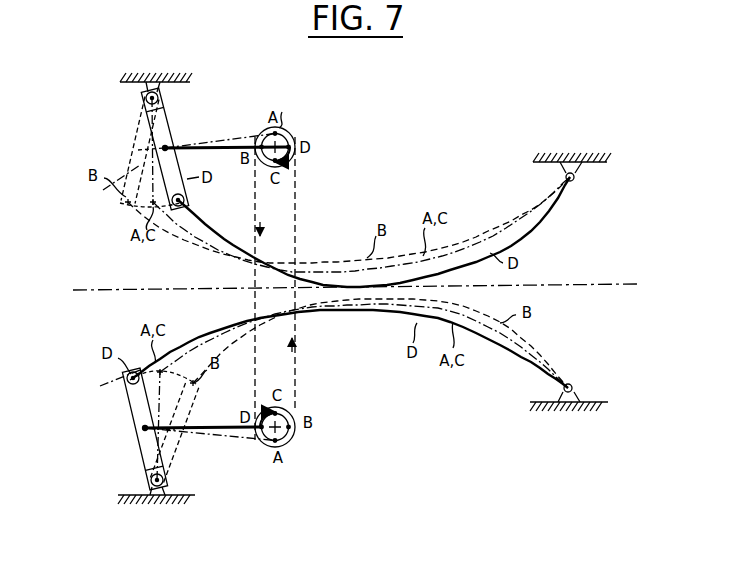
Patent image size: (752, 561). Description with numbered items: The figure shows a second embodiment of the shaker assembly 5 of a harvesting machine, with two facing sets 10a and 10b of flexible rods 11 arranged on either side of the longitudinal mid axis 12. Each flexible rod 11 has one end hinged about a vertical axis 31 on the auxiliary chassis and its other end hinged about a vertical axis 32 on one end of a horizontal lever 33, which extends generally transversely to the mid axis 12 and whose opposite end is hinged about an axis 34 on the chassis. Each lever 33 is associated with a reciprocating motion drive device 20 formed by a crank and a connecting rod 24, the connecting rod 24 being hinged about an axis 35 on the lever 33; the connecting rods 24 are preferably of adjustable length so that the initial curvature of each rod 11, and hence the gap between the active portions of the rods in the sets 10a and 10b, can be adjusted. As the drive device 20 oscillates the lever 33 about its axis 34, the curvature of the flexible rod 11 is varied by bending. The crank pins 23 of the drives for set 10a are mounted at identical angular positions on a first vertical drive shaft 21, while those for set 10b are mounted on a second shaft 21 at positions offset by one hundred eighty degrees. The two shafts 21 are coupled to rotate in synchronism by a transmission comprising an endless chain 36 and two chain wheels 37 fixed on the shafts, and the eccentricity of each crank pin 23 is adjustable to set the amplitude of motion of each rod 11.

The shaker assembly 5 is at (100, 272).
The first set of flexible rods 10a is at (343, 242).
The second set of flexible rods 10b is at (360, 326).
The flexible rod 11 is at (523, 237).
The longitudinal mid axis 12 is at (620, 283).
The reciprocating motion drive device 20 is at (303, 135).
The common vertical drive shaft 21 is at (290, 157).
The crank pin 23 is at (290, 132).
The connecting rod 24 is at (227, 146).
The vertical hinge axis 31 is at (575, 178).
The hinge axis on lever 32 is at (186, 202).
The horizontal lever 33 is at (168, 122).
The lever pivot axis 34 is at (146, 100).
The connecting rod hinge axis 35 is at (150, 165).
The endless chain 36 is at (253, 292).
The chain wheel 37 is at (275, 127).